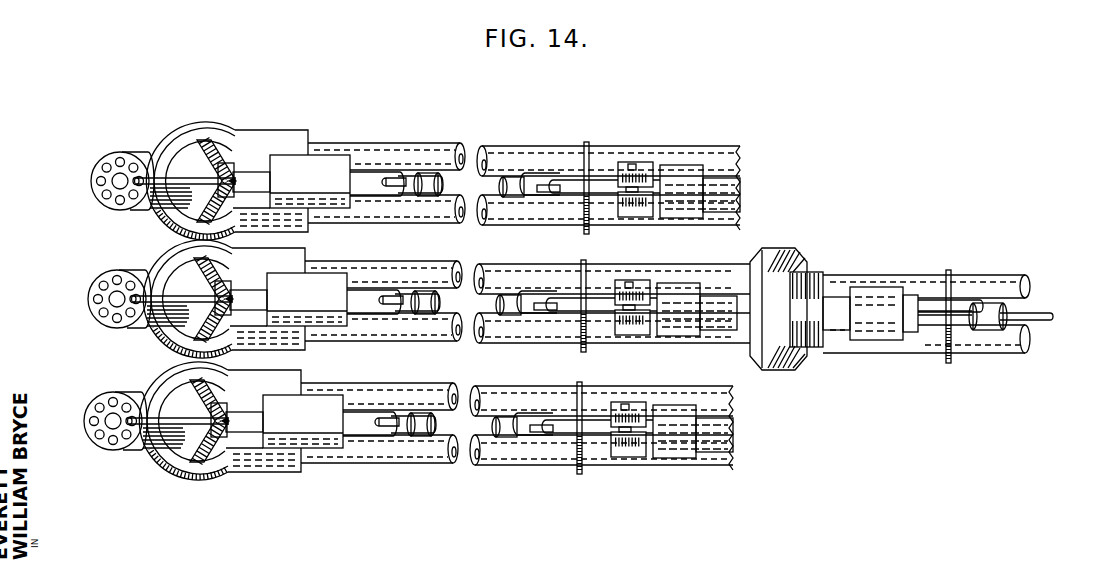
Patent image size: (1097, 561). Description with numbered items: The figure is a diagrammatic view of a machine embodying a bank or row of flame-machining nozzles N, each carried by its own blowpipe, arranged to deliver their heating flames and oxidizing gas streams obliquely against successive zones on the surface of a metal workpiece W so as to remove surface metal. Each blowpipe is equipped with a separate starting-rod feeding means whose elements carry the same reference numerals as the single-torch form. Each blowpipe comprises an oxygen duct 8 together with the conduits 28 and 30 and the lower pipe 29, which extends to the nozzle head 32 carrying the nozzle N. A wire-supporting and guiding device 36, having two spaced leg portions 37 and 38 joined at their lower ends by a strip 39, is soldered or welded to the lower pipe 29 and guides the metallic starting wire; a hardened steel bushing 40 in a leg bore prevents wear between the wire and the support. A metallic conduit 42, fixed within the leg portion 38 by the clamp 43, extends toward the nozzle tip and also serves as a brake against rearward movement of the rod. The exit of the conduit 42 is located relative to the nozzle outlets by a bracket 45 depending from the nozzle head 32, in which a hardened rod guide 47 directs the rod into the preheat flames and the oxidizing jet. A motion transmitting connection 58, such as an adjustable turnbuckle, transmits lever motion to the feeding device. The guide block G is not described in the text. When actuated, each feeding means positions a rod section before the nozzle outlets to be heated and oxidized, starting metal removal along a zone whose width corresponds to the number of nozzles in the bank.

The nozzle N is at (92, 170).
The metal workpiece W is at (165, 178).
The nozzle head 32 is at (255, 130).
The bracket 45 is at (250, 165).
The rod guide 47 is at (250, 177).
The guide block G is at (332, 153).
The metallic conduit 42 is at (365, 175).
The lower pipe 29 is at (407, 172).
The conduit 28 is at (432, 178).
The oxygen duct 8 is at (491, 150).
The conduit 30 is at (448, 208).
The clamp 43 is at (640, 176).
The leg portion 38 is at (680, 170).
The strip 39 is at (718, 180).
The wire-supporting and guiding device 36 is at (851, 264).
The leg portion 37 is at (880, 327).
The hardened steel bushing 40 is at (910, 297).
The motion transmitting connection 58 is at (1030, 315).